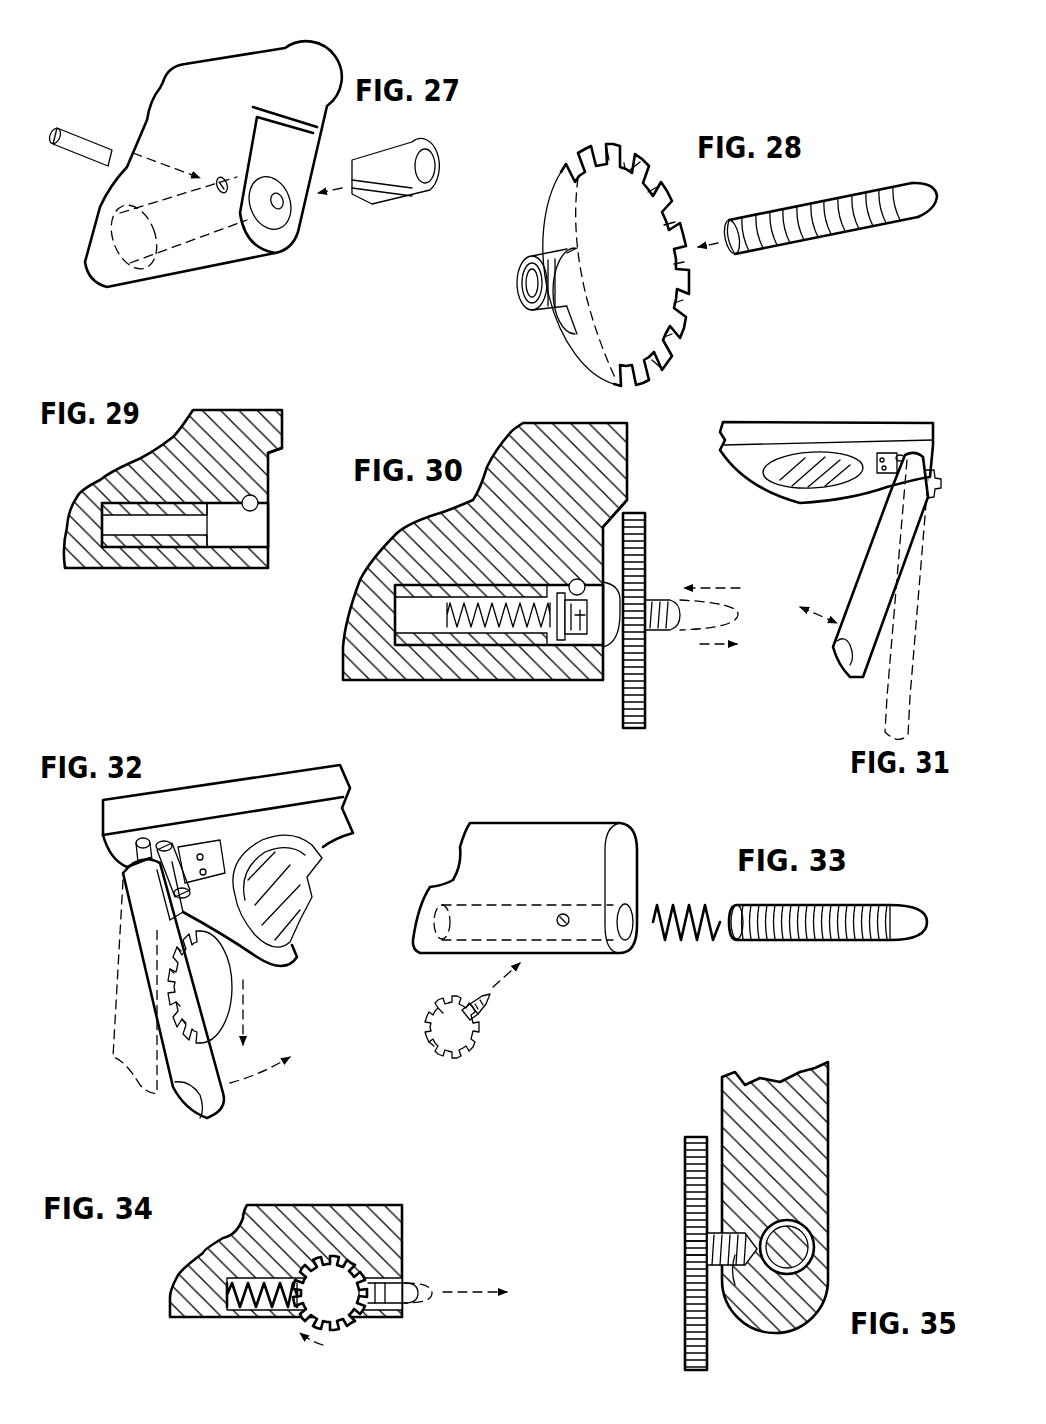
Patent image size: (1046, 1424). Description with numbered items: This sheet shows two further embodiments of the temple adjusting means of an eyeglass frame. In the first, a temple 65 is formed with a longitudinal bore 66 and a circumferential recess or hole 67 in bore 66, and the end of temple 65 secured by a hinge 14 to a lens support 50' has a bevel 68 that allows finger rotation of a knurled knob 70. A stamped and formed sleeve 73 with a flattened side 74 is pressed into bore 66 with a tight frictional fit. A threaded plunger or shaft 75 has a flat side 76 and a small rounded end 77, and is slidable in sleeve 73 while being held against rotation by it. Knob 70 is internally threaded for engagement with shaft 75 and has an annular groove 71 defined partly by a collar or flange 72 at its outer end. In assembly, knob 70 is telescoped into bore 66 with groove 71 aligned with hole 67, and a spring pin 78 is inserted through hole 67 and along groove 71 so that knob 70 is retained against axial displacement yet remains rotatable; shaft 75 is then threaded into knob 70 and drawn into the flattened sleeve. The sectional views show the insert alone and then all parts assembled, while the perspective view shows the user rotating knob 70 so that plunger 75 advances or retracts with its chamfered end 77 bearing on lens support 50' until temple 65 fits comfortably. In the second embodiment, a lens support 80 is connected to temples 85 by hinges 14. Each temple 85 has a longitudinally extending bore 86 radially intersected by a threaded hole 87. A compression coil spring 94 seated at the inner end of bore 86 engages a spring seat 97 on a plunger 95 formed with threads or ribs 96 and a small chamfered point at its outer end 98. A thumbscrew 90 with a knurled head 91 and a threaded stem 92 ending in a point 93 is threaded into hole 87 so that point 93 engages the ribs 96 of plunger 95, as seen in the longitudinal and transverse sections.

In FIG. 31, the hinge 14 is at (883, 500).
In FIG. 32, the hinge 14 is at (187, 860).
In FIG. 31, the lens support 50' is at (826, 439).
In FIG. 27, the temple 65 is at (220, 70).
In FIG. 29, the temple 65 is at (225, 421).
In FIG. 30, the temple 65 is at (502, 460).
In FIG. 31, the temple 65 is at (870, 574).
In FIG. 27, the longitudinal bore 66 is at (148, 268).
In FIG. 29, the longitudinal bore 66 is at (228, 547).
In FIG. 30, the longitudinal bore 66 is at (430, 650).
In FIG. 27, the circumferential recess 67 is at (282, 207).
In FIG. 29, the circumferential recess 67 is at (263, 508).
In FIG. 27, the bevel 68 is at (318, 124).
In FIG. 29, the bevel 68 is at (275, 452).
In FIG. 30, the bevel 68 is at (627, 507).
In FIG. 28, the knurled knob 70 is at (605, 146).
In FIG. 30, the knurled knob 70 is at (652, 541).
In FIG. 31, the knurled knob 70 is at (938, 502).
In FIG. 28, the annular groove 71 is at (566, 330).
In FIG. 30, the annular groove 71 is at (572, 648).
In FIG. 28, the collar 72 is at (527, 268).
In FIG. 30, the collar 72 is at (550, 640).
In FIG. 27, the sleeve 73 is at (385, 155).
In FIG. 29, the sleeve 73 is at (118, 500).
In FIG. 27, the flattened side 74 is at (400, 192).
In FIG. 29, the flattened side 74 is at (148, 524).
In FIG. 30, the flattened side 74 is at (385, 646).
In FIG. 28, the threaded plunger 75 is at (850, 184).
In FIG. 30, the threaded plunger 75 is at (480, 620).
In FIG. 28, the flat side 76 is at (726, 250).
In FIG. 28, the rounded end 77 is at (912, 189).
In FIG. 30, the rounded end 77 is at (682, 622).
In FIG. 27, the spring pin 78 is at (87, 125).
In FIG. 30, the spring pin 78 is at (580, 598).
In FIG. 32, the lens support 80 is at (247, 792).
In FIG. 32, the temple 85 is at (195, 1098).
In FIG. 33, the temple 85 is at (540, 830).
In FIG. 34, the temple 85 is at (333, 1206).
In FIG. 35, the temple 85 is at (812, 1160).
In FIG. 33, the longitudinally extending bore 86 is at (628, 932).
In FIG. 34, the longitudinally extending bore 86 is at (258, 1307).
In FIG. 35, the longitudinally extending bore 86 is at (795, 1237).
In FIG. 33, the threaded hole 87 is at (565, 927).
In FIG. 35, the threaded hole 87 is at (732, 1278).
In FIG. 32, the thumbscrew 90 is at (238, 976).
In FIG. 33, the thumbscrew 90 is at (432, 1046).
In FIG. 34, the thumbscrew 90 is at (339, 1291).
In FIG. 35, the thumbscrew 90 is at (680, 1191).
In FIG. 32, the knurled head 91 is at (166, 969).
In FIG. 33, the knurled head 91 is at (420, 1011).
In FIG. 34, the knurled head 91 is at (358, 1324).
In FIG. 35, the knurled head 91 is at (696, 1261).
In FIG. 33, the threaded stem 92 is at (480, 1014).
In FIG. 35, the threaded stem 92 is at (710, 1241).
In FIG. 33, the point 93 is at (490, 999).
In FIG. 35, the point 93 is at (790, 1272).
In FIG. 33, the compression coil spring 94 is at (680, 903).
In FIG. 34, the compression coil spring 94 is at (220, 1300).
In FIG. 32, the plunger 95 is at (135, 856).
In FIG. 33, the plunger 95 is at (855, 905).
In FIG. 34, the plunger 95 is at (396, 1293).
In FIG. 35, the plunger 95 is at (800, 1257).
In FIG. 33, the threads or ribs 96 is at (830, 927).
In FIG. 34, the threads or ribs 96 is at (283, 1308).
In FIG. 33, the spring seat 97 is at (737, 937).
In FIG. 33, the outer end 98 is at (903, 915).
In FIG. 34, the outer end 98 is at (420, 1286).